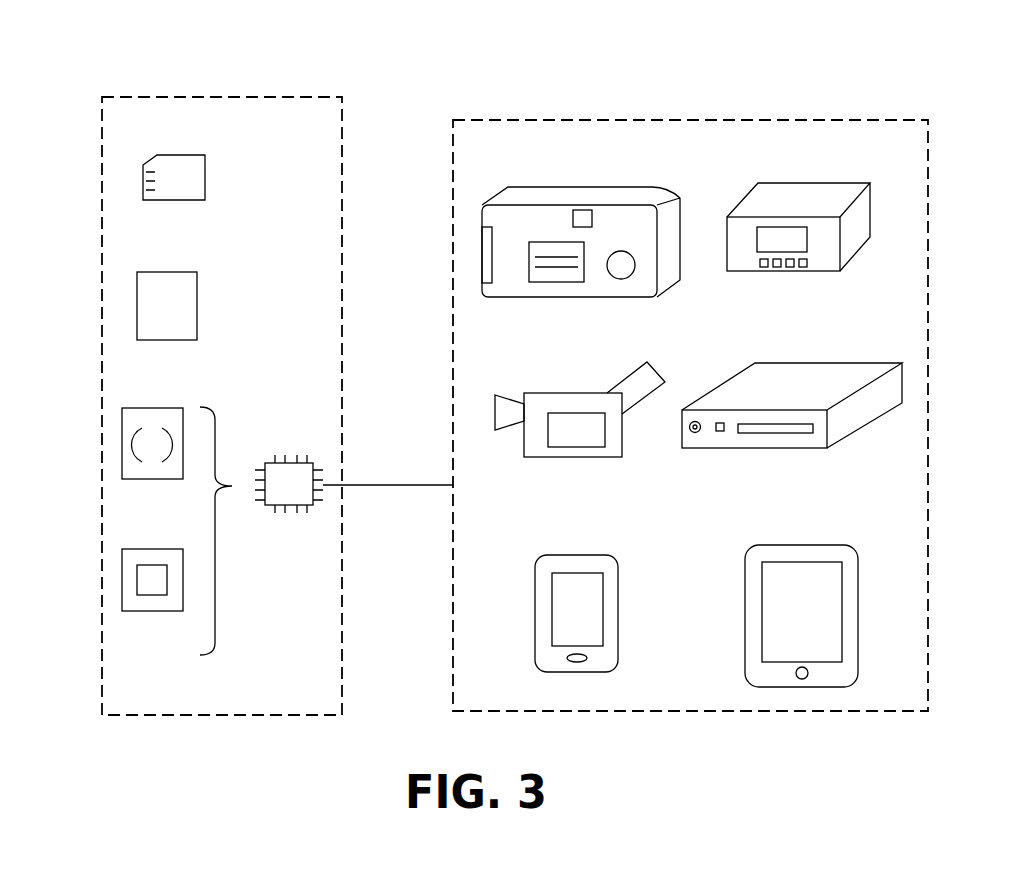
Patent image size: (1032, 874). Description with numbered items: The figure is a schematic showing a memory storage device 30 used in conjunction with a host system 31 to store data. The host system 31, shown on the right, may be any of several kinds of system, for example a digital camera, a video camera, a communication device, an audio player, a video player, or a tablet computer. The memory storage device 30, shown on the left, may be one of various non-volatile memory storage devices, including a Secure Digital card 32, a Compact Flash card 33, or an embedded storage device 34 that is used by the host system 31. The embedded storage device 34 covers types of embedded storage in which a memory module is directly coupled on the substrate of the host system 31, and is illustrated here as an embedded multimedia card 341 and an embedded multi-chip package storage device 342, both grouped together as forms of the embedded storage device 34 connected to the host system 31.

The memory storage device 30 is at (212, 97).
The host system 31 is at (613, 119).
The Secure Digital (SD) card 32 is at (143, 182).
The Compact Flash (CF) card 33 is at (137, 305).
The embedded storage device 34 is at (290, 461).
The embedded multimedia card (eMMC) 341 is at (122, 446).
The embedded multi-chip package (eMCP) storage device 342 is at (122, 583).